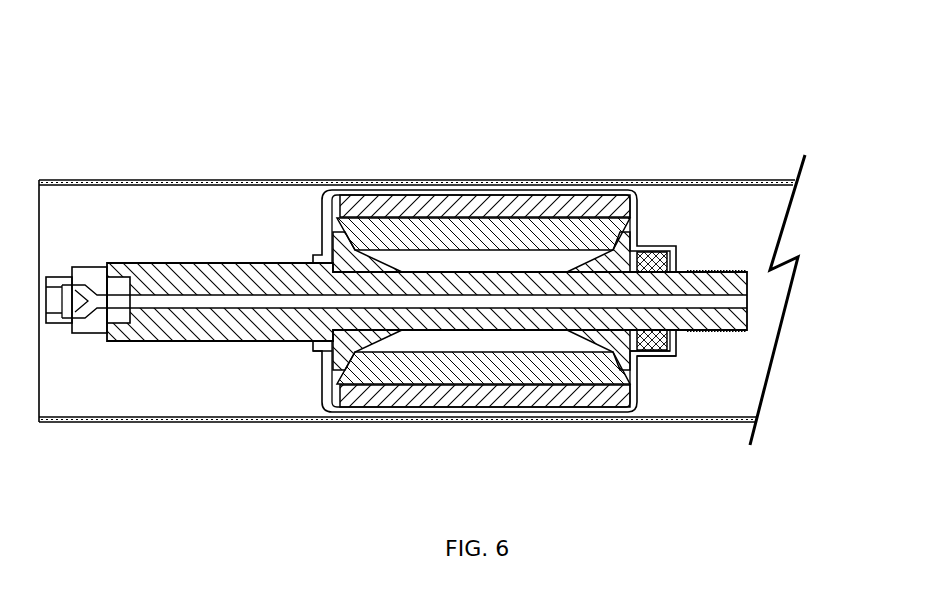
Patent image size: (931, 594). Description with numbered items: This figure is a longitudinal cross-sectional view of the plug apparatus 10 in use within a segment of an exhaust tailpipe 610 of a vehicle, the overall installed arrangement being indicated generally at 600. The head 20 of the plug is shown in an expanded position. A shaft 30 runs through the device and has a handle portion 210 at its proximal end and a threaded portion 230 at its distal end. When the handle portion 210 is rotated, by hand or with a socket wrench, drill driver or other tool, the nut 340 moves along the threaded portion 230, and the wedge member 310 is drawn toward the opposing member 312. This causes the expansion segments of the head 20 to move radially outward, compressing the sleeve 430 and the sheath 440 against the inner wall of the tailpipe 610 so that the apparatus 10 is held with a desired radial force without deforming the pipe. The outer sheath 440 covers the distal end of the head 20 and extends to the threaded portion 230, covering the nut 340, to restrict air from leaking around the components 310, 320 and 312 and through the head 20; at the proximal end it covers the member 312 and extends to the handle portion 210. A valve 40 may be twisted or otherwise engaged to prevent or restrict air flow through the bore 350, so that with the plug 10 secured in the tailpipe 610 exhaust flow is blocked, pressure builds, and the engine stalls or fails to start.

The linear actuator assembly 600 is at (600, 99).
The exhaust tailpipe 610 is at (133, 180).
The plug apparatus 10 is at (295, 372).
The head 20 is at (410, 414).
The shaft 30 is at (206, 347).
The valve 40 is at (86, 340).
The handle portion 210 is at (240, 263).
The threaded portion 230 is at (693, 280).
The wedge member 310 is at (632, 412).
The member 312 is at (325, 390).
The component 320 is at (508, 373).
The nut 340 is at (652, 252).
The bore 350 is at (740, 305).
The sleeve 430 is at (543, 205).
The sheath 440 is at (352, 218).